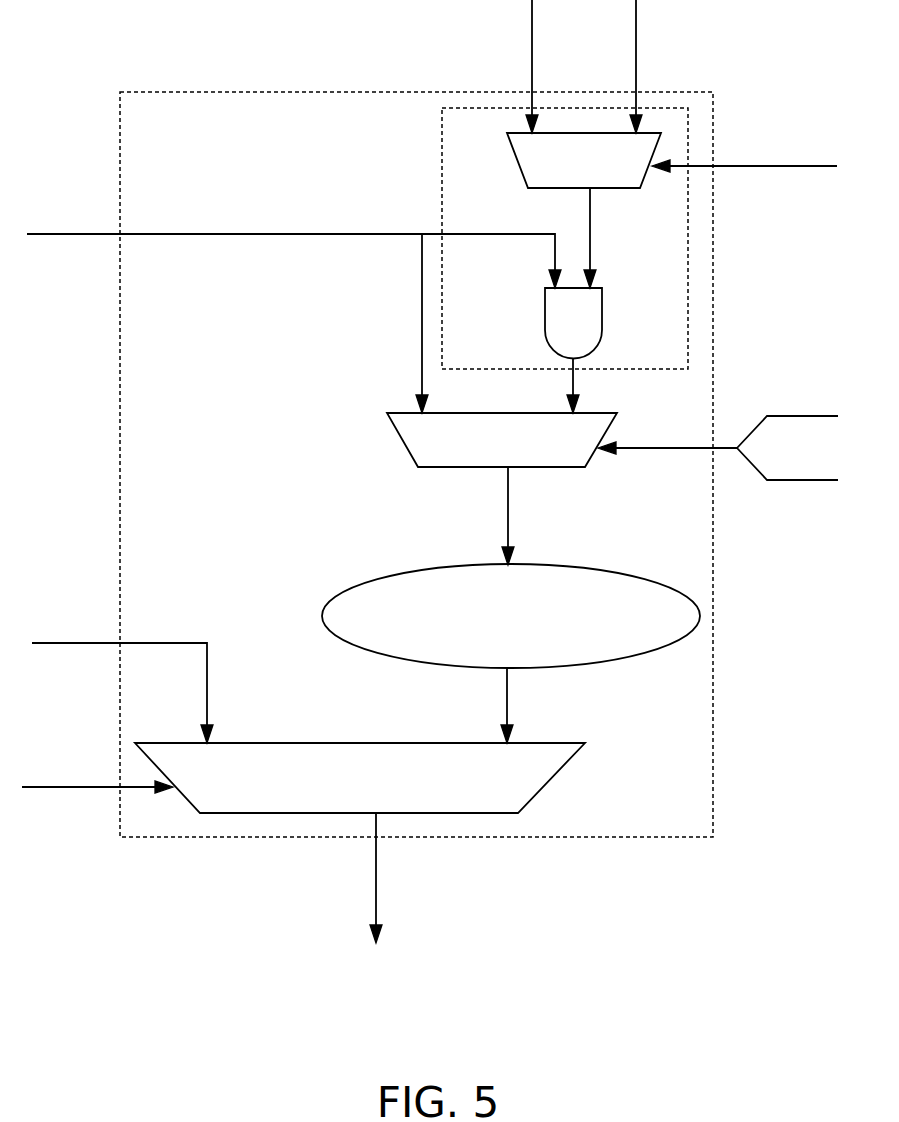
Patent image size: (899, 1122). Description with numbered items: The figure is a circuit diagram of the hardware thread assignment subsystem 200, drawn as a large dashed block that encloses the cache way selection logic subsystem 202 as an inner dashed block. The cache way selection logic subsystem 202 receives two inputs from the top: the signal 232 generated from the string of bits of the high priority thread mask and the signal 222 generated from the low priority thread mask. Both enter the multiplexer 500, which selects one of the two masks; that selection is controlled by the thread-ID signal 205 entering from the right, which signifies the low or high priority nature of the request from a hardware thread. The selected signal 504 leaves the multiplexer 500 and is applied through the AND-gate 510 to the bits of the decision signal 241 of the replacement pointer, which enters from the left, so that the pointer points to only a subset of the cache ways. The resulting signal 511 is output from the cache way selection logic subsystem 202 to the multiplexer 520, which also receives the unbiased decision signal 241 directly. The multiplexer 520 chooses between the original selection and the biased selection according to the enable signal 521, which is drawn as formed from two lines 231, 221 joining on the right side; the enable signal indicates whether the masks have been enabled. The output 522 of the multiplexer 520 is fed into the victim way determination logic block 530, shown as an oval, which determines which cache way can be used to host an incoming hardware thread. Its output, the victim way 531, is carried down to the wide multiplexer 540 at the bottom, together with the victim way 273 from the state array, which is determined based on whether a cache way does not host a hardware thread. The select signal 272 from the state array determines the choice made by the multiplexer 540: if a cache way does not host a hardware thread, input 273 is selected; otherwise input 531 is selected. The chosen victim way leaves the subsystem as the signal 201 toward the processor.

The hardware thread assignment subsystem 200 is at (245, 92).
The cache way selection logic subsystem 202 is at (441, 143).
The multiplexer 500 is at (513, 155).
The signal 232 is at (532, 23).
The signal 222 is at (640, 22).
The thread-ID signal 205 is at (770, 169).
The selected signal 504 is at (592, 235).
The decision signal 241 is at (77, 237).
The AND-gate 510 is at (603, 318).
The resulting signal 511 is at (575, 384).
The multiplexer 520 is at (400, 443).
The enable signal 521 is at (650, 452).
The input signal 231 is at (788, 414).
The input signal 221 is at (794, 483).
The multiplexer output signal 522 is at (510, 519).
The victim way determination logic block 530 is at (622, 573).
The victim way 531 is at (509, 703).
The multiplexer 540 is at (547, 784).
The victim way 273 is at (60, 640).
The select signal 272 is at (62, 790).
The signal 201 is at (378, 883).